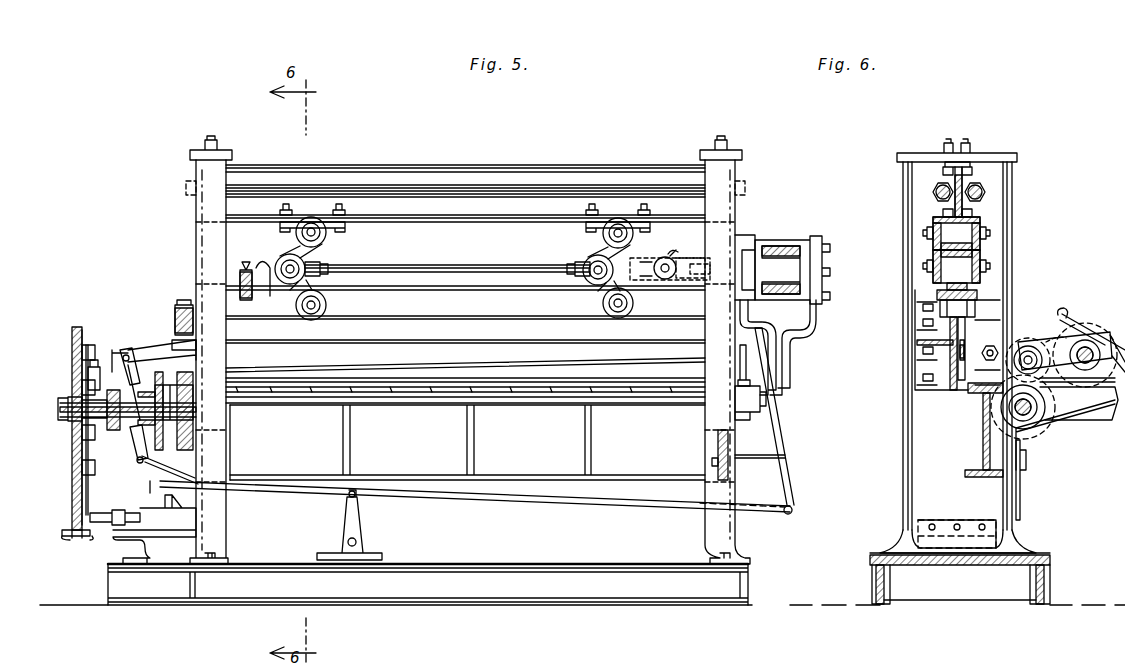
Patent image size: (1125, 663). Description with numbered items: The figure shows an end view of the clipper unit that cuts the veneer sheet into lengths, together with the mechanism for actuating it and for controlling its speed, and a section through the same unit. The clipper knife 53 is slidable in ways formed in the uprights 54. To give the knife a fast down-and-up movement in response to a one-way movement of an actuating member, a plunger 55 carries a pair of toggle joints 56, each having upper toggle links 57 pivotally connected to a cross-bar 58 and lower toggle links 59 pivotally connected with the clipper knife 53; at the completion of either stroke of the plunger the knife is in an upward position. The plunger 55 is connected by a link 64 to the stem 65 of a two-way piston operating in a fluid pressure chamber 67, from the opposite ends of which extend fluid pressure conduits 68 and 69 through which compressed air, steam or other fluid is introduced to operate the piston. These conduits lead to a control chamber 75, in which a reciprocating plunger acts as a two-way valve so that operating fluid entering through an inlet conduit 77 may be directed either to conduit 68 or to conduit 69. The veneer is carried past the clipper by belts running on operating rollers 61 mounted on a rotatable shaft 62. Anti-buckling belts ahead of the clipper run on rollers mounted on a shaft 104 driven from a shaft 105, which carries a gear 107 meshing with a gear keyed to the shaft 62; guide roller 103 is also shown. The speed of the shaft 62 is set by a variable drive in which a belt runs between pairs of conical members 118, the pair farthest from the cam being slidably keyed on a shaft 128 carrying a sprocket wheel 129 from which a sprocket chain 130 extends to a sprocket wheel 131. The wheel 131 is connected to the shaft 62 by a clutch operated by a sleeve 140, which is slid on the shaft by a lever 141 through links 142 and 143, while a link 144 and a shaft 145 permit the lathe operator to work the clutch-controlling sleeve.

In FIG. 5, the clipper knife 53 is at (430, 372).
In FIG. 6, the clipper knife 53 is at (960, 388).
In FIG. 5, the uprights 54 is at (207, 247).
In FIG. 5, the plunger 55 is at (468, 264).
In FIG. 5, the toggle joints 56 is at (305, 265).
In FIG. 5, the upper toggle links 57 is at (298, 245).
In FIG. 6, the upper toggle links 57 is at (978, 250).
In FIG. 5, the cross-bar 58 is at (475, 164).
In FIG. 6, the cross-bar 58 is at (980, 204).
In FIG. 5, the lower toggle links 59 is at (298, 295).
In FIG. 6, the lower toggle links 59 is at (972, 288).
In FIG. 6, the operating rollers 61 is at (1025, 425).
In FIG. 5, the shaft 62 is at (68, 420).
In FIG. 6, the shaft 62 is at (1030, 420).
In FIG. 5, the link 64 is at (690, 270).
In FIG. 5, the stem 65 is at (668, 262).
In FIG. 5, the fluid pressure chamber 67 is at (780, 246).
In FIG. 5, the fluid pressure conduit 68 is at (752, 322).
In FIG. 5, the fluid pressure conduit 69 is at (820, 312).
In FIG. 5, the control chamber 75 is at (768, 414).
In FIG. 5, the inlet conduit 77 is at (745, 368).
In FIG. 6, the guide arm 103 is at (1050, 350).
In FIG. 6, the shaft 104 is at (1028, 350).
In FIG. 6, the shaft 105 is at (1084, 345).
In FIG. 5, the gear 107 is at (186, 312).
In FIG. 5, the conical members 118 is at (167, 500).
In FIG. 5, the shaft 128 is at (102, 514).
In FIG. 5, the sprocket wheel 129 is at (68, 534).
In FIG. 5, the sprocket chain 130 is at (80, 324).
In FIG. 5, the sprocket wheel 131 is at (62, 427).
In FIG. 5, the sleeve 140 is at (136, 348).
In FIG. 5, the lever 141 is at (792, 472).
In FIG. 5, the link 142 is at (447, 502).
In FIG. 6, the link 142 is at (1024, 480).
In FIG. 5, the link 143 is at (135, 450).
In FIG. 5, the link 144 is at (347, 527).
In FIG. 5, the shaft 145 is at (358, 542).